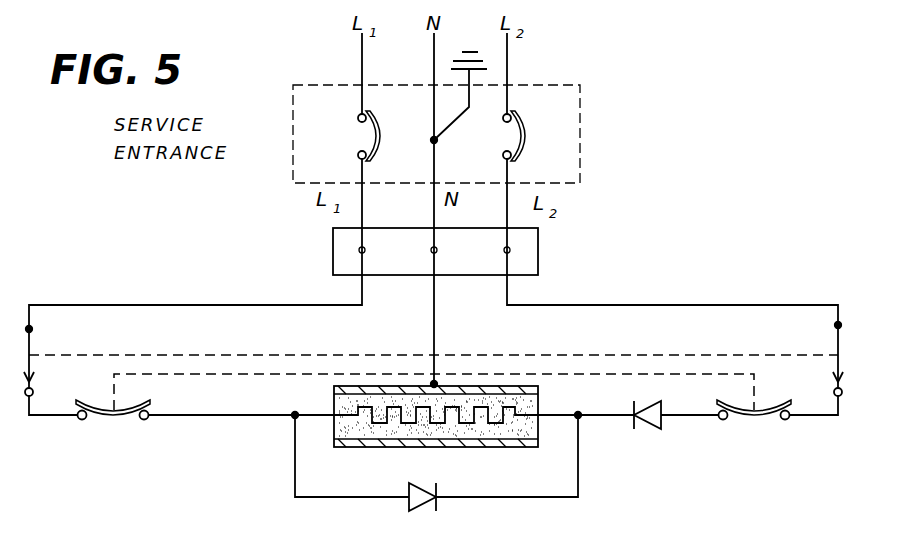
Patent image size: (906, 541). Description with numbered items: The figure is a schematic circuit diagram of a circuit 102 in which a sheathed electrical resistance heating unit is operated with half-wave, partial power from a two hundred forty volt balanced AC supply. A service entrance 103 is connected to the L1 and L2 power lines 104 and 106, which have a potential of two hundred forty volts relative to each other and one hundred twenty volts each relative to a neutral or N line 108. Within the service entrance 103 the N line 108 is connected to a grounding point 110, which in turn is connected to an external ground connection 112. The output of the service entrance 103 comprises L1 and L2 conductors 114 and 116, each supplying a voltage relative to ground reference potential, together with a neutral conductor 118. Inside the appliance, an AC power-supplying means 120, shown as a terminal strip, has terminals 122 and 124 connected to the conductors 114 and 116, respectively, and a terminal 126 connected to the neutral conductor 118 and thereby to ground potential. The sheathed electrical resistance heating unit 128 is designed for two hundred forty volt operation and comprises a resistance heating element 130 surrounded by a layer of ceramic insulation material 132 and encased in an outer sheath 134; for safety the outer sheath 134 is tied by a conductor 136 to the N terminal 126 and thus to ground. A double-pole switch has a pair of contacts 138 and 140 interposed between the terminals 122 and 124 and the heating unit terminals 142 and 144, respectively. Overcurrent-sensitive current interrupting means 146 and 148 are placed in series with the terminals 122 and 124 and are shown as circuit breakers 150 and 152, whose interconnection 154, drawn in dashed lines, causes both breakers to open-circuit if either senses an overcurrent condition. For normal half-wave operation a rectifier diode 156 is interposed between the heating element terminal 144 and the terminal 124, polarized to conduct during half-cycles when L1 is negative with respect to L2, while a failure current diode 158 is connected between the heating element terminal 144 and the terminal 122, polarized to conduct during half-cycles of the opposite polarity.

The circuit 102 is at (108, 240).
The service entrance 103 is at (583, 110).
The L1 power line 104 is at (362, 63).
The L2 power line 106 is at (507, 62).
The neutral line 108 is at (434, 72).
The grounding point 110 is at (434, 140).
The external ground connection 112 is at (470, 50).
The L1 conductor 114 is at (365, 221).
The L2 conductor 116 is at (507, 222).
The neutral conductor 118 is at (434, 222).
The AC power-supplying means 120 is at (538, 262).
The terminal 122 is at (359, 250).
The terminal 124 is at (505, 253).
The terminal 126 is at (432, 253).
The sheathed electrical resistance heating unit 128 is at (351, 451).
The resistance heating element 130 is at (406, 425).
The ceramic insulation material 132 is at (334, 402).
The outer sheath 134 is at (470, 443).
The conductor 136 is at (434, 341).
The contact 138 is at (29, 340).
The contact 140 is at (838, 337).
The heating unit terminal 142 is at (295, 418).
The heating unit terminal 144 is at (578, 418).
The overcurrent-sensitive current interrupting means 146 is at (123, 421).
The overcurrent-sensitive current interrupting means 148 is at (786, 444).
The circuit breaker 150 is at (112, 419).
The circuit breaker 152 is at (760, 420).
The interconnection 154 is at (250, 375).
The rectifier diode 156 is at (662, 425).
The failure current diode 158 is at (408, 500).